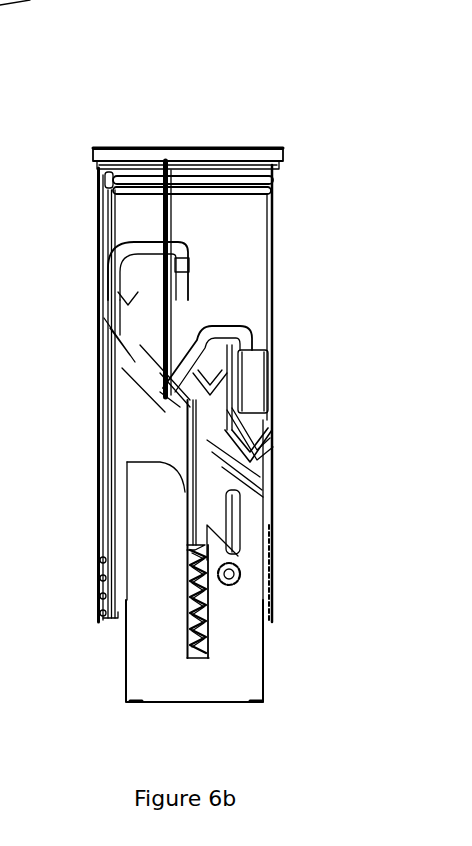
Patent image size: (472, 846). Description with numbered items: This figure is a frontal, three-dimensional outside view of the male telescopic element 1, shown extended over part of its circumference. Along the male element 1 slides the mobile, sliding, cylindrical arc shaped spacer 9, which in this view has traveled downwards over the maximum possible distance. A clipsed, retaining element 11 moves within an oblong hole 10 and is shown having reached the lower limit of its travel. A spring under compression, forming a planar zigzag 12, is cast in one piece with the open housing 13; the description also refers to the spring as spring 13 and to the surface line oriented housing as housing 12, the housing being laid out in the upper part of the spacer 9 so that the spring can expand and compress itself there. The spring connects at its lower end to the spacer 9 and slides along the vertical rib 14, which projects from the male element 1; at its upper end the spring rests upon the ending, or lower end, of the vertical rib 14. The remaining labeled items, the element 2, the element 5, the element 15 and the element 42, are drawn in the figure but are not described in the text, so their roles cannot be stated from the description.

The male telescopic element 1 is at (291, 244).
The device 2 is at (0, 87).
The cup member 5 is at (202, 466).
The mobile, sliding, cylindrical arc shaped spacer 9 is at (95, 643).
The oblong hole 10 is at (243, 509).
The clipsed retaining element 11 is at (258, 566).
The planar zigzag spring / housing 12 is at (165, 576).
The spring forming a planar zigzag / open housing 13 is at (221, 615).
The vertical rib 14 is at (177, 444).
The cap 15 is at (217, 127).
The channel 42 is at (193, 268).